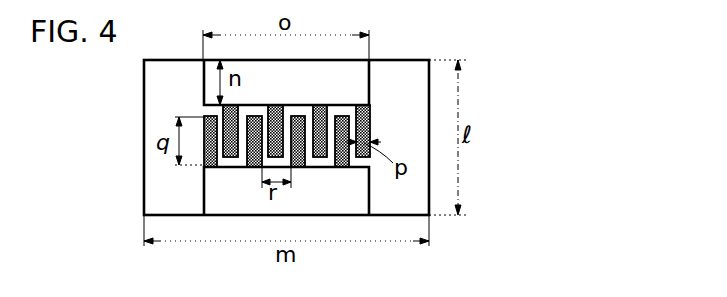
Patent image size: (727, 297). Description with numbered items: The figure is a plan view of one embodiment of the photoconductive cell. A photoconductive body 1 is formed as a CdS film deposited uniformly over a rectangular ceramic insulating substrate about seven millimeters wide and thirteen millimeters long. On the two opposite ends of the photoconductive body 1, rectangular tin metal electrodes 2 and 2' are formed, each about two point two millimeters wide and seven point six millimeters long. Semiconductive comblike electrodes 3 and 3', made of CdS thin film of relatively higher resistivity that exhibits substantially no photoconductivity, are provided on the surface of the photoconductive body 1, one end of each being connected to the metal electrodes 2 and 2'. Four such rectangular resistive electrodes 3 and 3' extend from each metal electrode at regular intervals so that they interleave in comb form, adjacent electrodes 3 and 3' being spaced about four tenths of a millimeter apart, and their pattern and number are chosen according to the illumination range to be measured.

The photoconductive body 1 is at (241, 158).
The metal electrode 2 is at (305, 87).
The metal electrode 2' is at (289, 179).
The semiconductive comblike electrode 3 is at (380, 125).
The semiconductive comblike electrode 3' is at (187, 121).